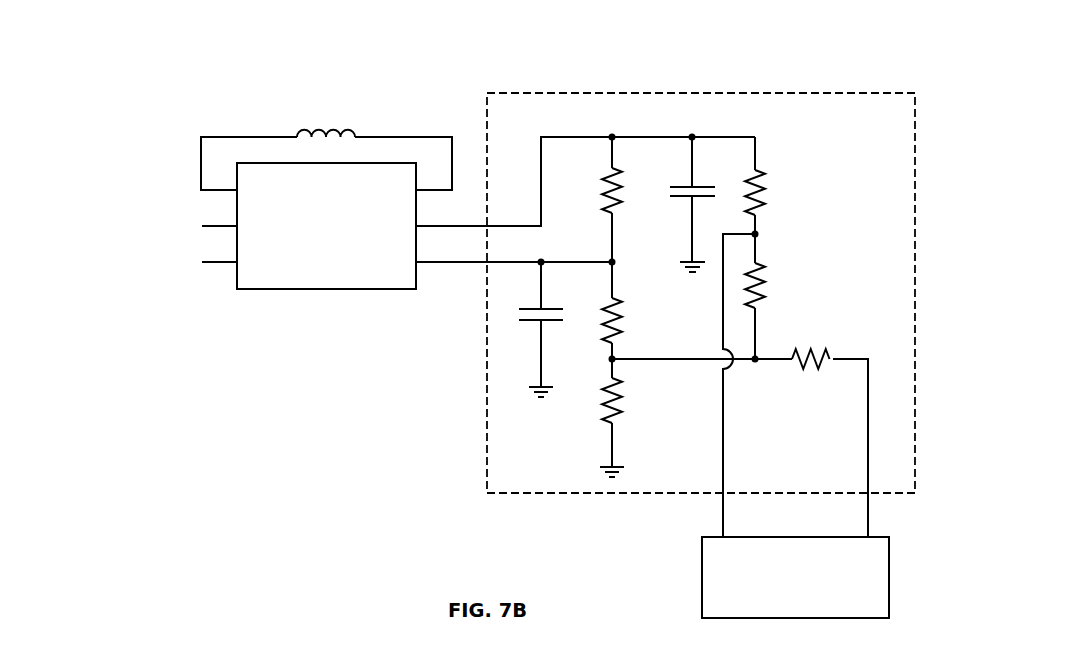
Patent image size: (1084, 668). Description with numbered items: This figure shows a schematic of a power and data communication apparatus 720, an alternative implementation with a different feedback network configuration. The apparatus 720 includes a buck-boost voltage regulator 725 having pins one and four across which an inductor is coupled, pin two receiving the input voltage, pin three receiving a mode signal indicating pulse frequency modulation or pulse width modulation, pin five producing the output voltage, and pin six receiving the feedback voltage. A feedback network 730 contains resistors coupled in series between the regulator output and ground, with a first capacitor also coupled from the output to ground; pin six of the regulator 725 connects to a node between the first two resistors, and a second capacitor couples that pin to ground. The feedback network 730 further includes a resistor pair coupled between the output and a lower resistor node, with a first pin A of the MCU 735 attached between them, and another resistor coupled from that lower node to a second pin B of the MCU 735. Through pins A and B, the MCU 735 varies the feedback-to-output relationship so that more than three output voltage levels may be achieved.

The power and data communication apparatus 720 is at (806, 42).
The buck-boost voltage regulator 725 is at (345, 282).
The feedback network 730 is at (903, 126).
The MCU 735 is at (777, 605).